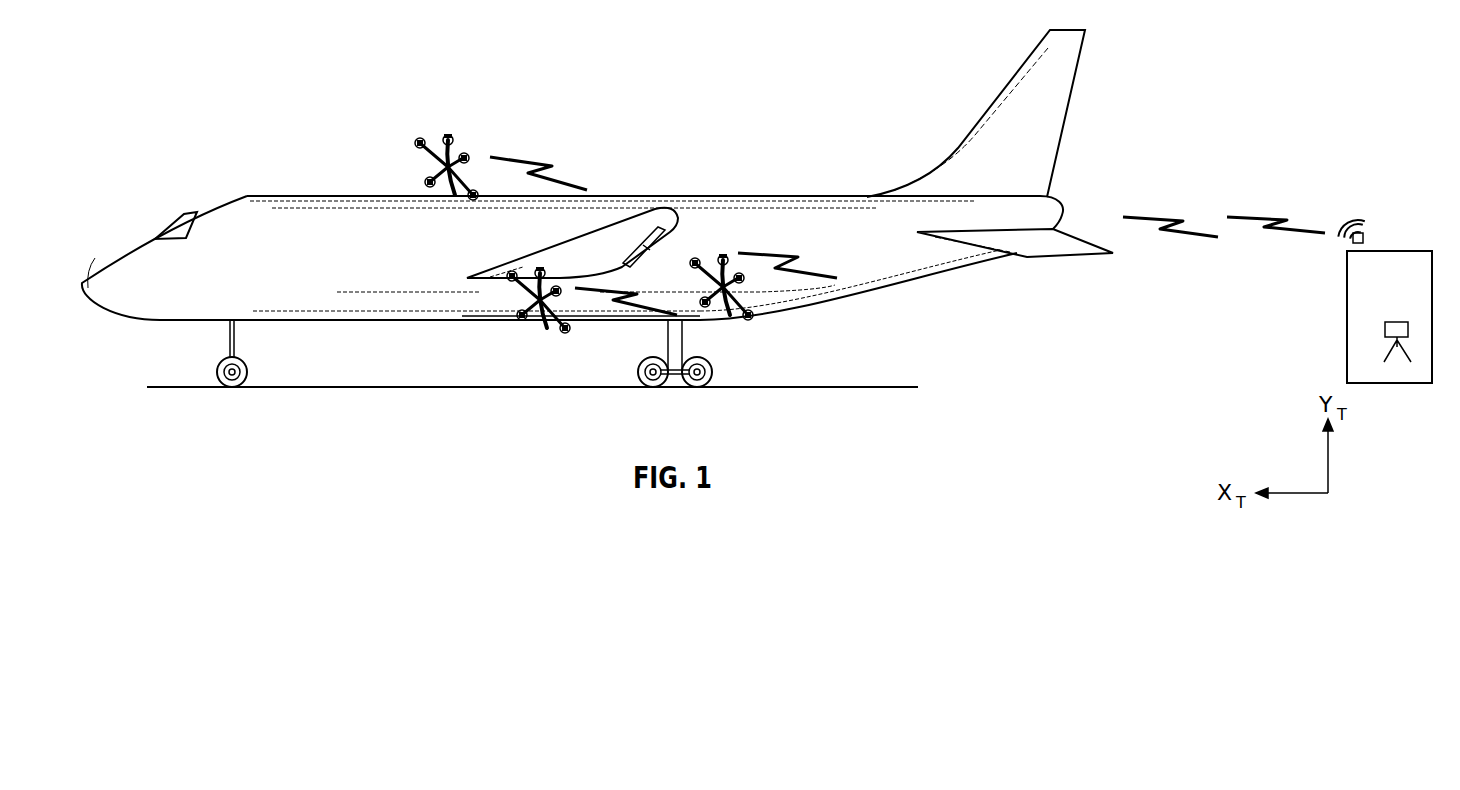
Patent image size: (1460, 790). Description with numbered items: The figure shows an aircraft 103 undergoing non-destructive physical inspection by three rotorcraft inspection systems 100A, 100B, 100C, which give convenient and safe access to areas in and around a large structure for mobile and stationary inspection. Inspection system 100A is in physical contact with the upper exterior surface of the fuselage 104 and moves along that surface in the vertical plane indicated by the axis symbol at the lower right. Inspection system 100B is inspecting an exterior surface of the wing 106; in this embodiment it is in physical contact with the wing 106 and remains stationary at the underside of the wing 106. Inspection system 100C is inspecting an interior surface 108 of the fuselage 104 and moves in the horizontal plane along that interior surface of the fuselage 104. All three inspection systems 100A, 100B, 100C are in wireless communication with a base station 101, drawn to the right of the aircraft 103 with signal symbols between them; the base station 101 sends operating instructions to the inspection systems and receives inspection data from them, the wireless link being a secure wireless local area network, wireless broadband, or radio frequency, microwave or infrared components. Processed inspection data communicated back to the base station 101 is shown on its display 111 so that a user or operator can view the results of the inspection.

The rotorcraft inspection system 100A is at (462, 150).
The rotorcraft inspection system 100B is at (540, 330).
The rotorcraft inspection system 100C is at (727, 317).
The base station 101 is at (1387, 251).
The aircraft 103 is at (160, 223).
The fuselage 104 is at (312, 194).
The wing 106 is at (637, 213).
The interior surface 108 is at (960, 268).
The display 111 is at (1396, 321).